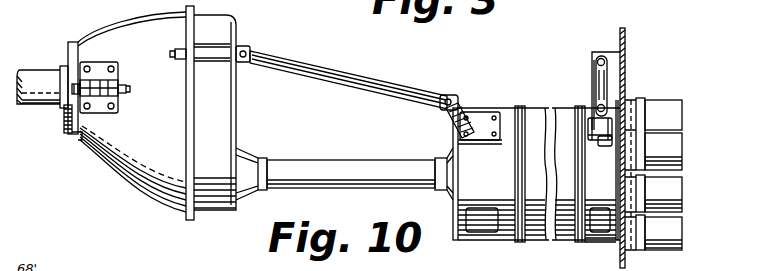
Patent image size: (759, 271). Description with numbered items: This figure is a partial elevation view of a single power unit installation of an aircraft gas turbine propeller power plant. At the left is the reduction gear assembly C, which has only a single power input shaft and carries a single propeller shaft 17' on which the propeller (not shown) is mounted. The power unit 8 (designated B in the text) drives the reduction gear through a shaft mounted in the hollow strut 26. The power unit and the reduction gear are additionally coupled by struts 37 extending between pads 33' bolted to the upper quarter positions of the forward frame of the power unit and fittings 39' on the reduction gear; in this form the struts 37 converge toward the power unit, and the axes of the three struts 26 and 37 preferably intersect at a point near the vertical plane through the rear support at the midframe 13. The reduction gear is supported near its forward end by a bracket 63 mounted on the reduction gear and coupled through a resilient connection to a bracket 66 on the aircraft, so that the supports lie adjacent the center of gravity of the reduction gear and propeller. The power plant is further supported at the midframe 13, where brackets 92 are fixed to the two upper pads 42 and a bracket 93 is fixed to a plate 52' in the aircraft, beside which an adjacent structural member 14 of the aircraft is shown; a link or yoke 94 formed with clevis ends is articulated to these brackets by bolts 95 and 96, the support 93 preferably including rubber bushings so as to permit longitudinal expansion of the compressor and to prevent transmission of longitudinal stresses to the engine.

The propeller shaft 17' is at (40, 70).
The bracket 66 is at (76, 82).
The bracket 63 is at (100, 66).
The reduction gear assembly C is at (96, 163).
The fittings 39' is at (260, 42).
The struts 37 is at (340, 80).
The hollow strut 26 is at (321, 166).
The pads 33' is at (480, 106).
The cylinder 8 is at (536, 108).
The upper pads 42 is at (488, 222).
The midframe 13 is at (592, 238).
The brackets 92 is at (601, 140).
The link or yoke 94 is at (600, 90).
The bolt 95 is at (598, 62).
The bolt 96 is at (598, 108).
The plate 52' is at (632, 91).
The bracket 93 is at (623, 55).
The frame member 14 is at (665, 118).